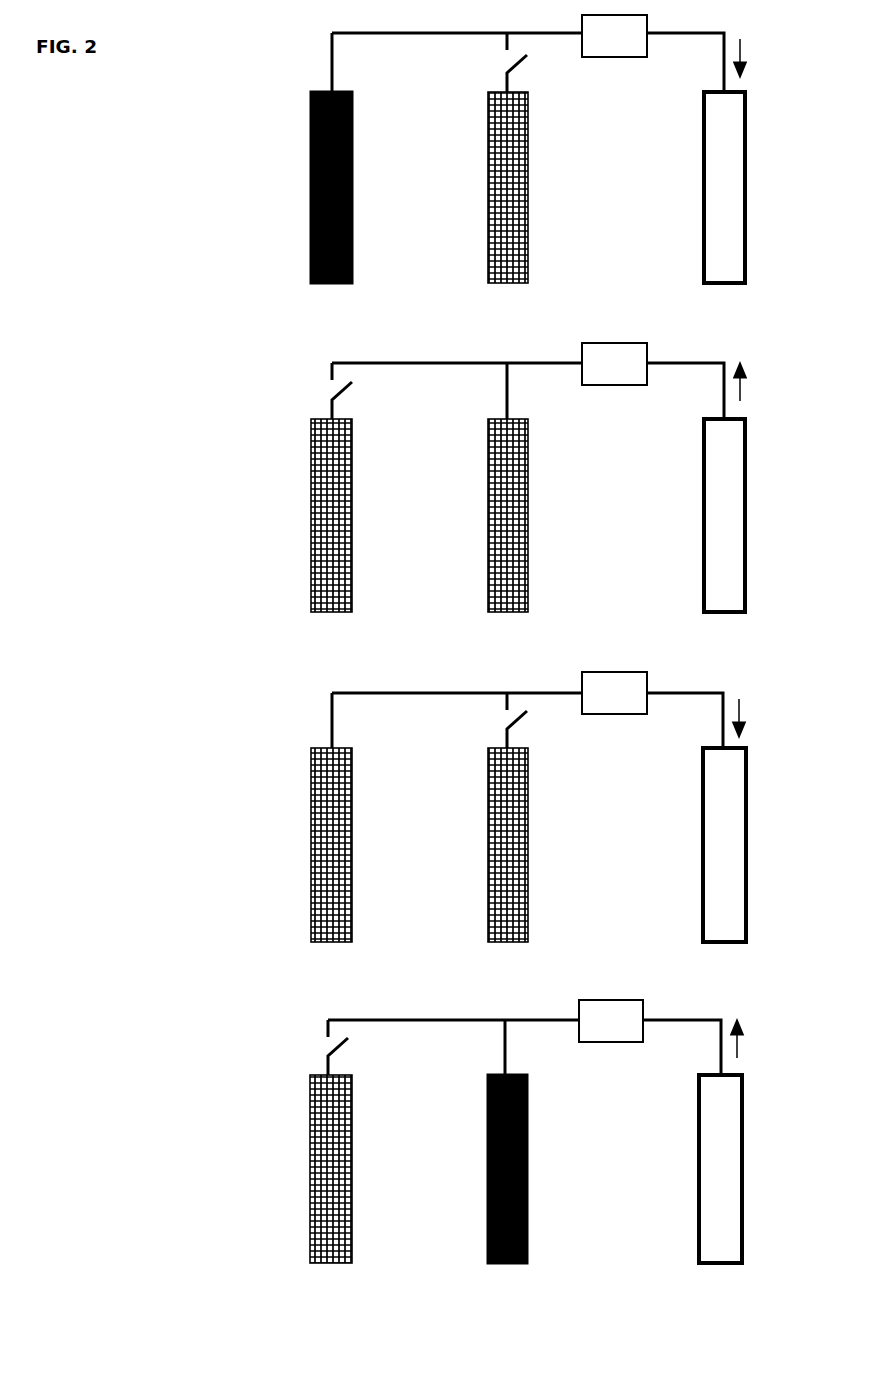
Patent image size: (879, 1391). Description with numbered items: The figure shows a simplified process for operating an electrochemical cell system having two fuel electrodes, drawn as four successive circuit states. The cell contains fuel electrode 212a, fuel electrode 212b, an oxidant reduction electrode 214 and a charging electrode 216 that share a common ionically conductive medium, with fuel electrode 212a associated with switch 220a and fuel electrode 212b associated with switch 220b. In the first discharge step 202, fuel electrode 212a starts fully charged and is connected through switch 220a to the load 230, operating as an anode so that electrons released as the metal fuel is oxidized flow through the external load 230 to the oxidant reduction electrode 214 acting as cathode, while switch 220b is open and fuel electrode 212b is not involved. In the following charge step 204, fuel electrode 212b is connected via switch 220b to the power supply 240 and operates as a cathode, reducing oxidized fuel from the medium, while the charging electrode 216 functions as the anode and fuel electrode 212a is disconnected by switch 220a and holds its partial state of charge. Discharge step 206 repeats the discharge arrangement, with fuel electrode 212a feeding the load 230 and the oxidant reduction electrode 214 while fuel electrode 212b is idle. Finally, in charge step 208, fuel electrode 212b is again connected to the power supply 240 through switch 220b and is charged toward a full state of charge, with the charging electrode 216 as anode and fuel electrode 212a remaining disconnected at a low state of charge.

The first discharge step 202 is at (435, 103).
The charge step 204 is at (435, 433).
The discharge step 206 is at (435, 764).
The charge step 208 is at (434, 1088).
The fuel electrode 212a is at (331, 694).
The fuel electrode 212b is at (509, 694).
The oxidant reduction electrode 214 is at (734, 504).
The charging electrode 216 is at (732, 831).
The switch 220a is at (312, 554).
The switch 220b is at (488, 554).
The load 230 is at (614, 364).
The power supply 240 is at (613, 692).